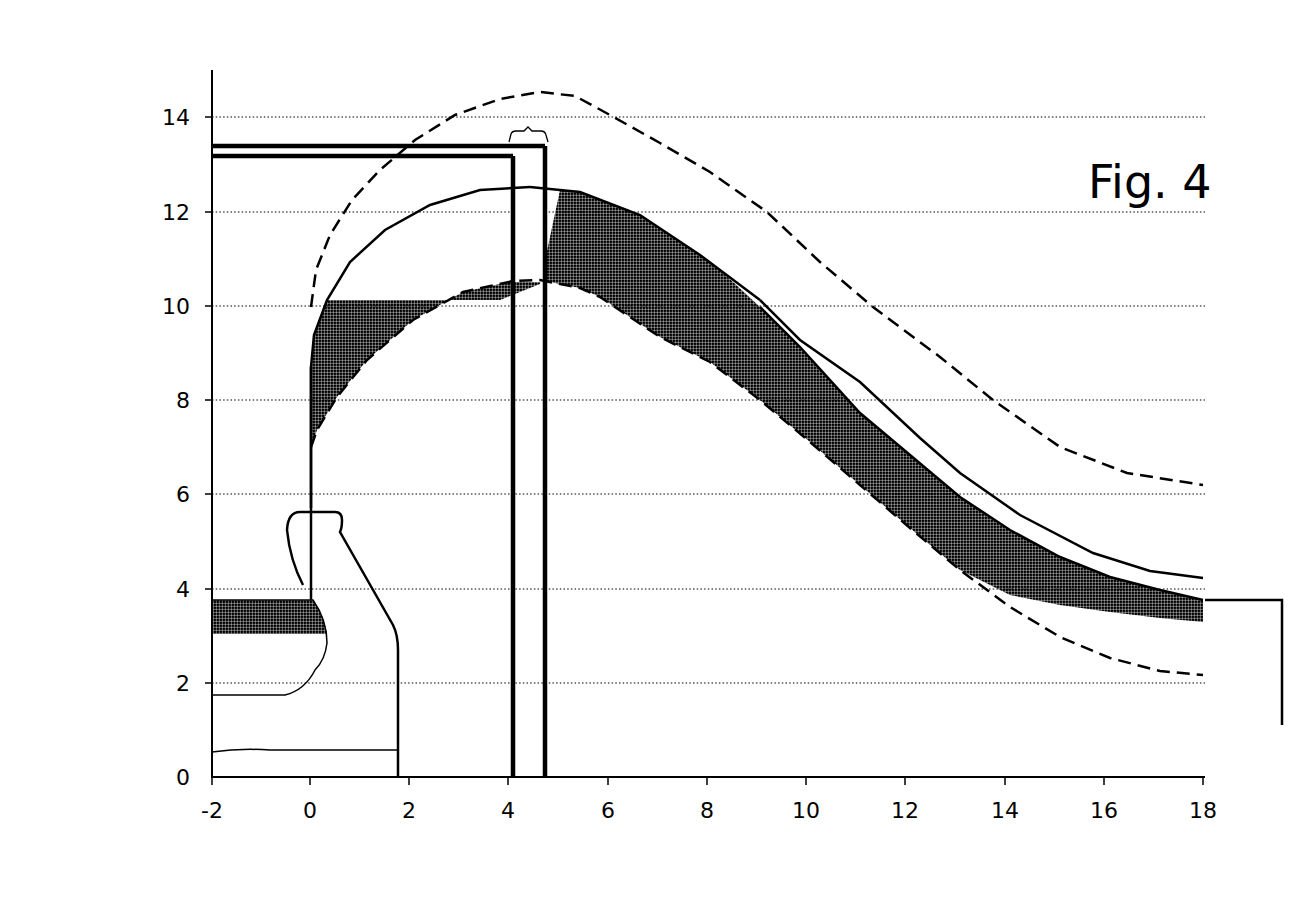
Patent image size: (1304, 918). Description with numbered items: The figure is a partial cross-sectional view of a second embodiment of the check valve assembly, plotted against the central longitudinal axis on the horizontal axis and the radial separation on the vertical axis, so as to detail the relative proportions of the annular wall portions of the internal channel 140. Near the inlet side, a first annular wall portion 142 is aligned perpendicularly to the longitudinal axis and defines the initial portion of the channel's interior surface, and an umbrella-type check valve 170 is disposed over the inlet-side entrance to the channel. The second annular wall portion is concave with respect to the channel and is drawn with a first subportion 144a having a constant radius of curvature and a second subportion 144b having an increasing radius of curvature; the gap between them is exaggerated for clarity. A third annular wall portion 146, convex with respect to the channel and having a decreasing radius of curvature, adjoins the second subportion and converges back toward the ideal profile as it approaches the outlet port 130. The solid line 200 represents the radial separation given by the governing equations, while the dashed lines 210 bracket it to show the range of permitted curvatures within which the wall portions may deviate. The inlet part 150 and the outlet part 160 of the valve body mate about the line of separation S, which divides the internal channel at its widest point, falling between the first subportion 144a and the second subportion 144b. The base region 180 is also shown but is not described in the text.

The outlet port 130 is at (1262, 663).
The internal channel 140 is at (748, 661).
The first annular wall portion 142 is at (311, 462).
The first subportion 144a is at (397, 223).
The second subportion 144b is at (620, 207).
The third annular wall portion 146 is at (1033, 530).
The inlet part 150 is at (274, 365).
The outlet part 160 is at (932, 175).
The umbrella-type check valve 170 is at (323, 568).
The base block 180 is at (278, 662).
The line of equation r' 200 is at (960, 473).
The range 210 is at (930, 383).
The line of separation S is at (528, 130).